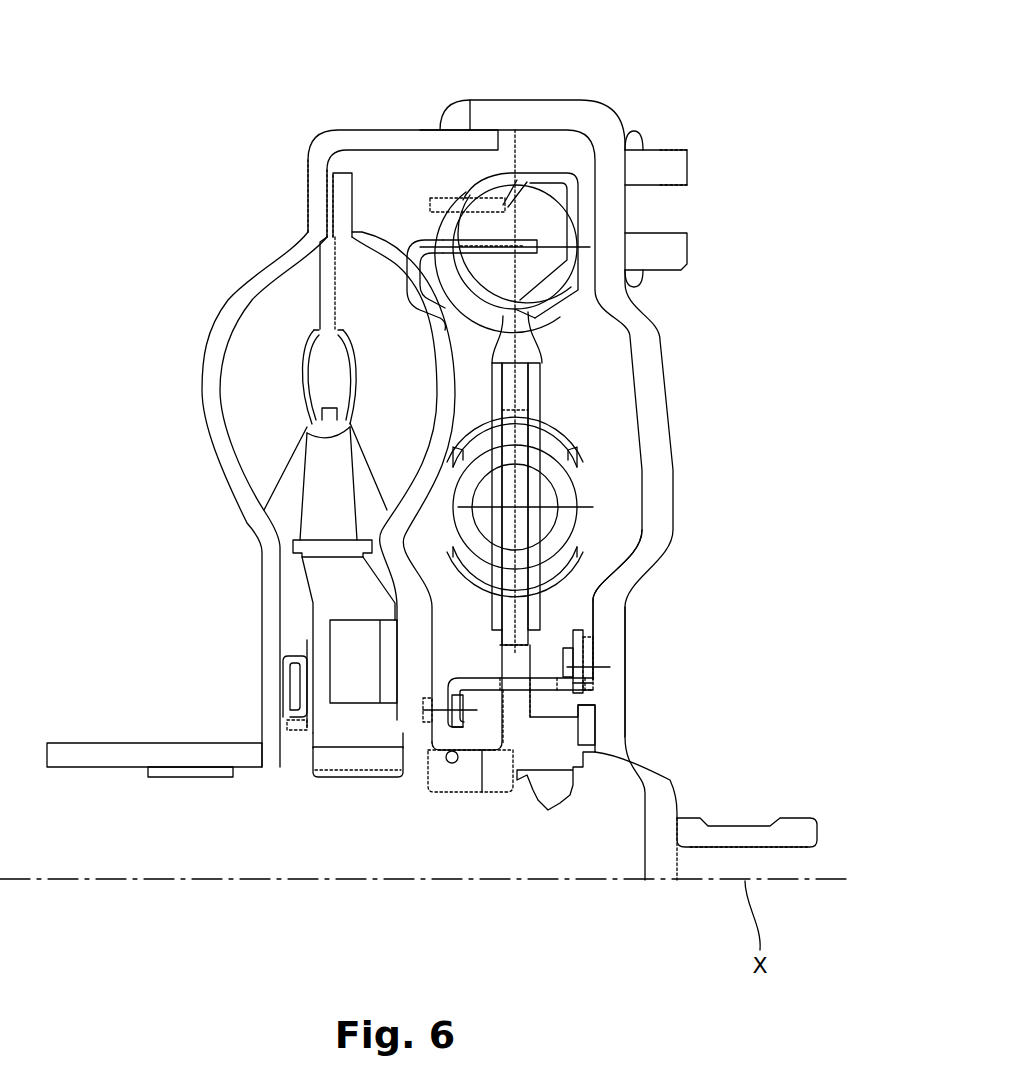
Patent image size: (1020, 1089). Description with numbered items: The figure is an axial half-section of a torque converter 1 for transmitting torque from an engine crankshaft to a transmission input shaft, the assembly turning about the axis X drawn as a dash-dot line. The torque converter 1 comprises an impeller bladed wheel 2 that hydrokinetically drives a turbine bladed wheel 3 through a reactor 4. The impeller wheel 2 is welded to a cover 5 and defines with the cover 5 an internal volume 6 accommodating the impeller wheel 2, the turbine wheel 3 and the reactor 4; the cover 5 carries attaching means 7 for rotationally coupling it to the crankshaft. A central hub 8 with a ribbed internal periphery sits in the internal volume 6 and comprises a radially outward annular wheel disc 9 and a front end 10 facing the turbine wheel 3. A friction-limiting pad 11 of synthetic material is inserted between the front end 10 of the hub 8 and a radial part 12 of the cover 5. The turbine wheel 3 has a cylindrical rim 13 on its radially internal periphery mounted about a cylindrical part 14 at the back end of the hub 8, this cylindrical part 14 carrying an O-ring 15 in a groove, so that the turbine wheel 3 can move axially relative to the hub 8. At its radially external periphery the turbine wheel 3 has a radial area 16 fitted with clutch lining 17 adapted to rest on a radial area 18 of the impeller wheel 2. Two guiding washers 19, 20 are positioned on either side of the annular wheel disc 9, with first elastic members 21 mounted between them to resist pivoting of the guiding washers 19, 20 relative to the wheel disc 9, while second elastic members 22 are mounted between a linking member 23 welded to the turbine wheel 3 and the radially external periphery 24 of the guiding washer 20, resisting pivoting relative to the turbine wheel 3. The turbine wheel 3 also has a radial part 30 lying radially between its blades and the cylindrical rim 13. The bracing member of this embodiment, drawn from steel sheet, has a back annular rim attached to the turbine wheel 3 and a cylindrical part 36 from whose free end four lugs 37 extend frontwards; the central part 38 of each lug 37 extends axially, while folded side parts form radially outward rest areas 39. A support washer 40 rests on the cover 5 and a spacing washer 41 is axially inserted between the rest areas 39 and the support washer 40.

The torque converter 1 is at (655, 100).
The impeller bladed wheel 2 is at (210, 403).
The turbine bladed wheel 3 is at (440, 365).
The reactor 4 is at (322, 492).
The cover 5 is at (566, 115).
The internal volume 6 is at (392, 190).
The attaching means 7 is at (653, 170).
The central hub 8 is at (485, 765).
The annular wheel disc 9 is at (548, 680).
The front end 10 is at (597, 752).
The pad 11 is at (587, 722).
The radial part 12 is at (613, 678).
The cylindrical rim 13 is at (478, 748).
The cylindrical part 14 is at (486, 770).
The O-ring 15 is at (447, 760).
The radial area 16 is at (347, 200).
The clutch lining 17 is at (347, 200).
The radial area 18 is at (318, 207).
The guiding washer 19 is at (497, 380).
The guiding washer 20 is at (535, 403).
The first elastic members 21 is at (565, 485).
The second elastic members 22 is at (560, 293).
The linking member 23 is at (438, 245).
The radially external periphery 24 is at (545, 175).
The radial part 30 is at (440, 677).
The cylindrical part 36 is at (476, 686).
The lugs 37 is at (523, 590).
The central part 38 is at (593, 683).
The rest areas 39 is at (568, 667).
The support washer 40 is at (588, 643).
The spacing washer 41 is at (587, 630).